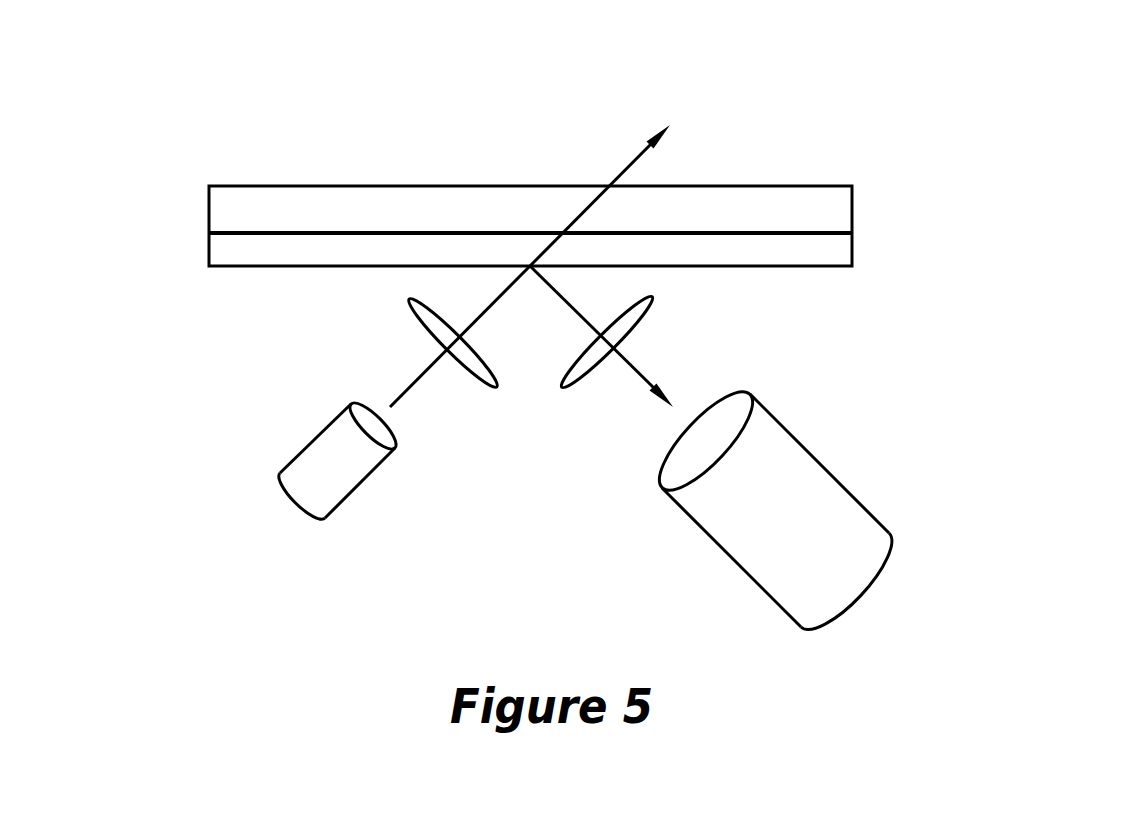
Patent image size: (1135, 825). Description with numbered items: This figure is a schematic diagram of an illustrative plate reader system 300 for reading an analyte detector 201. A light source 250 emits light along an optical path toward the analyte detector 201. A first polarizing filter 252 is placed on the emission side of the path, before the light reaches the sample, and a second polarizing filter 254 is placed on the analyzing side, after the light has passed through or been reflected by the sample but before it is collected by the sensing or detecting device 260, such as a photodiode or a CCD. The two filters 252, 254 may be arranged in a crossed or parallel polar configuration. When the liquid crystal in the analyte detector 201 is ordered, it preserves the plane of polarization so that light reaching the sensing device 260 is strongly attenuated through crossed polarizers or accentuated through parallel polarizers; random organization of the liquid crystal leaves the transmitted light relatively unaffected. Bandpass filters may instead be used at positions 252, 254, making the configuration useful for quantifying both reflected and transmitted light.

The analyte detector 201 is at (190, 227).
The light source 250 is at (350, 477).
The first polarizing filter 252 is at (411, 302).
The second polarizing filter 254 is at (657, 300).
The sensing or detecting device 260 is at (808, 468).
The plate reader system 300 is at (785, 86).